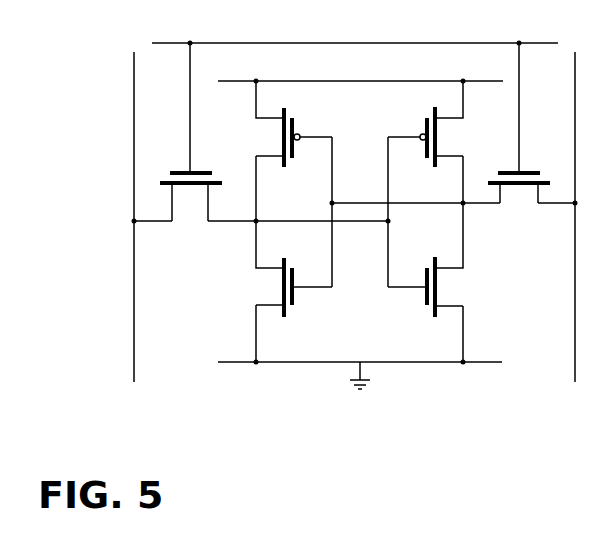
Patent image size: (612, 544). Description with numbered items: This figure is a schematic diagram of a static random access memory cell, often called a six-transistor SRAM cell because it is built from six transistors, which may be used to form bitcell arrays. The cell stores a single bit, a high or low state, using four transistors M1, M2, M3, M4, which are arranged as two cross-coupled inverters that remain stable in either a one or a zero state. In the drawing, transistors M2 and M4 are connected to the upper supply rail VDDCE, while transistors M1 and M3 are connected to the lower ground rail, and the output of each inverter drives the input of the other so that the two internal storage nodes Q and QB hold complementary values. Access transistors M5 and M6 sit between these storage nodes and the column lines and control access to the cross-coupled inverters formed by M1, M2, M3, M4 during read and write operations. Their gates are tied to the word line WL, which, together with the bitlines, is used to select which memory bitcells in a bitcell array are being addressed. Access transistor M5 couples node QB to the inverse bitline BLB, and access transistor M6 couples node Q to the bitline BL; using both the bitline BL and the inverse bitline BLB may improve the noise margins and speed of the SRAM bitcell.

The transistor M1 is at (294, 291).
The transistor M2 is at (294, 151).
The transistor M3 is at (425, 282).
The transistor M4 is at (425, 142).
The access transistor M5 is at (187, 132).
The access transistor M6 is at (523, 123).
The word line WL is at (355, 31).
The bitline BL is at (558, 217).
The inverse bitline BLB is at (175, 321).
The cell supply voltage VDDCE is at (360, 68).
The storage node Q is at (453, 212).
The complementary storage node QB is at (247, 228).